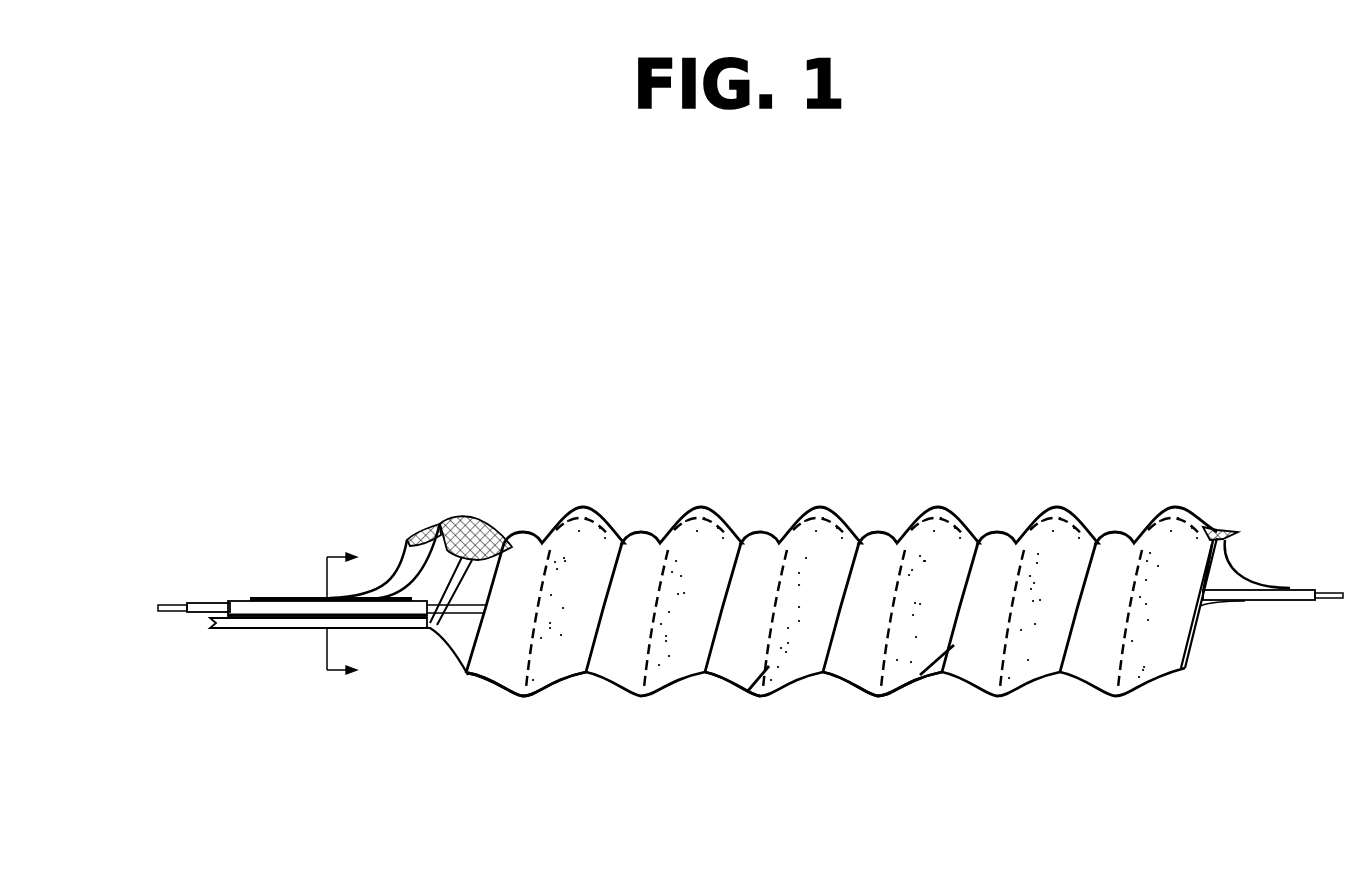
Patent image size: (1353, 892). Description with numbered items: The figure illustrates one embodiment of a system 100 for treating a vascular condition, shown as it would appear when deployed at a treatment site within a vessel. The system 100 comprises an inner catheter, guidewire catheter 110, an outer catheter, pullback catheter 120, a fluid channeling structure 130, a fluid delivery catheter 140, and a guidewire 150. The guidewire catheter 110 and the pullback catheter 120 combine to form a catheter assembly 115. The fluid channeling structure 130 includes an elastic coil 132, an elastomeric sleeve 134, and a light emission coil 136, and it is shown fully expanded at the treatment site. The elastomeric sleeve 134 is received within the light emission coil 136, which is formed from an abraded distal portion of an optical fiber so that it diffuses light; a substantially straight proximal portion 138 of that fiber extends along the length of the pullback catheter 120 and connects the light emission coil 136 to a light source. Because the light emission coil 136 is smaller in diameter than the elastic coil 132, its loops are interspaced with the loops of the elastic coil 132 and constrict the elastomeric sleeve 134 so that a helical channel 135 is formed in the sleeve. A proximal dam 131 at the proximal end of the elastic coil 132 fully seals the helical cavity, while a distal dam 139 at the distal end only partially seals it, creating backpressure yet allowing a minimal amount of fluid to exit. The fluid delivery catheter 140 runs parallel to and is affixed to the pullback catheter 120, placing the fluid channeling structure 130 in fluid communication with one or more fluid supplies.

The system for treating a vascular condition 100 is at (107, 207).
The guidewire catheter 110 is at (193, 603).
The catheter assembly 115 is at (237, 594).
The pullback catheter 120 is at (243, 601).
The fluid channeling structure 130 is at (820, 487).
The proximal dam 131 is at (462, 521).
The elastic coil 132 is at (750, 698).
The elastomeric sleeve 134 is at (845, 678).
The helical channel 135 is at (563, 697).
The light emission coil 136 is at (920, 674).
The proximal portion of the fiber 138 is at (280, 598).
The distal dam 139 is at (1218, 535).
The fluid delivery catheter 140 is at (297, 622).
The guidewire 150 is at (178, 612).